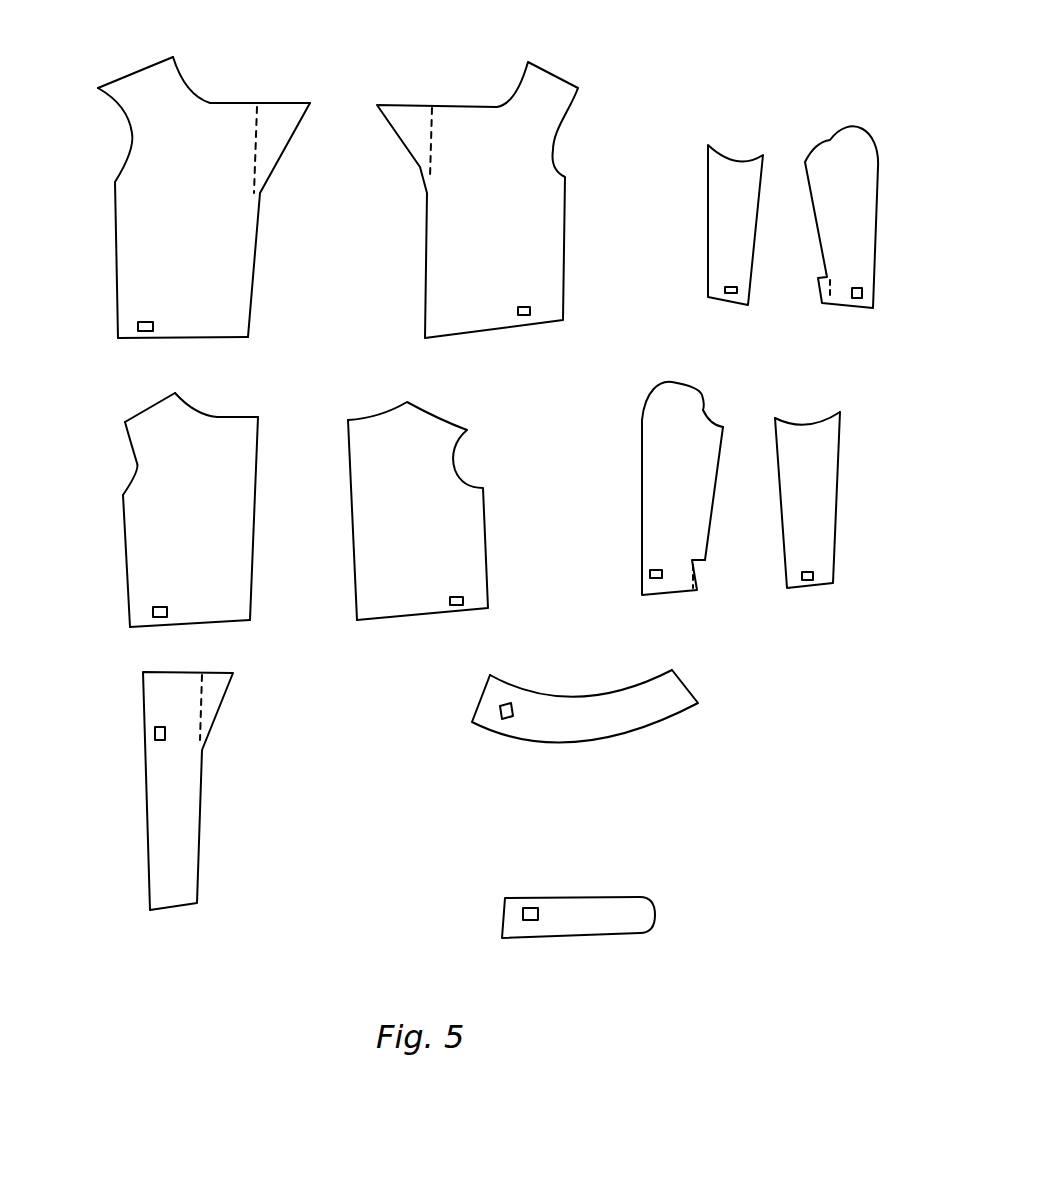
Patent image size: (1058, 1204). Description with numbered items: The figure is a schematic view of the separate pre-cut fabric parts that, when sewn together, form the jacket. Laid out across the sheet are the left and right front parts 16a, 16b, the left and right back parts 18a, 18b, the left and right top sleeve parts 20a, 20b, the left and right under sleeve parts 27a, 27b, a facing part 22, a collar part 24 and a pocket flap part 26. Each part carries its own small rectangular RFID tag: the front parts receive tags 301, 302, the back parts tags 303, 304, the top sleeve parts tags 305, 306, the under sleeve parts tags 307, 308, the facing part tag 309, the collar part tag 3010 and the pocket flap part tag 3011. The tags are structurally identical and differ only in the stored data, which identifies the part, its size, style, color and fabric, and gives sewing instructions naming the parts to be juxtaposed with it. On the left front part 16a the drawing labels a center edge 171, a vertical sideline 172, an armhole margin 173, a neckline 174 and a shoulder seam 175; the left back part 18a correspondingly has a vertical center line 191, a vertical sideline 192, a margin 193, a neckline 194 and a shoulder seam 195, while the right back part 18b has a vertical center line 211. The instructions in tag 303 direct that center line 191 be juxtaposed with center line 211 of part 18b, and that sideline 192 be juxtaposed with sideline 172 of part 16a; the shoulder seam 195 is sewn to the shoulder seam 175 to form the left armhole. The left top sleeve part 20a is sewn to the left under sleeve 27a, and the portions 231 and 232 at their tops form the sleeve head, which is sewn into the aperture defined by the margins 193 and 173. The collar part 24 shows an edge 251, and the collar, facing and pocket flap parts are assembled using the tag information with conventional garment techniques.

The left front part 16a is at (183, 194).
The right front part 16b is at (509, 210).
The vertical center line 171 is at (255, 230).
The vertical sideline 172 is at (117, 264).
The margin 173 is at (128, 118).
The neckline 174 is at (210, 101).
The shoulder seam 175 is at (136, 66).
The left back part 18a is at (187, 517).
The right back part 18b is at (411, 541).
The vertical center line 191 is at (252, 562).
The vertical sideline 192 is at (126, 550).
The margin 193 is at (137, 458).
The neckline 194 is at (212, 415).
The shoulder seam 195 is at (153, 405).
The left top sleeve part 20a is at (651, 475).
The right top sleeve part 20b is at (870, 215).
The vertical center line 211 is at (350, 515).
The facing part 22 is at (174, 791).
The sleeve head portion 231 is at (676, 378).
The sleeve head portion 232 is at (806, 428).
The collar part 24 is at (583, 718).
The collar edge 251 is at (585, 692).
The pocket flap part 26 is at (612, 896).
The left under sleeve part 27a is at (783, 508).
The right under sleeve part 27b is at (723, 225).
The RFID tag 301 is at (144, 332).
The RFID tag 302 is at (523, 316).
The RFID tag 303 is at (160, 618).
The RFID tag 304 is at (458, 607).
The RFID tag 305 is at (648, 575).
The RFID tag 306 is at (863, 293).
The RFID tag 307 is at (805, 582).
The RFID tag 308 is at (740, 292).
The RFID tag 309 is at (153, 735).
The RFID tag 3010 is at (500, 720).
The RFID tag 3011 is at (530, 905).